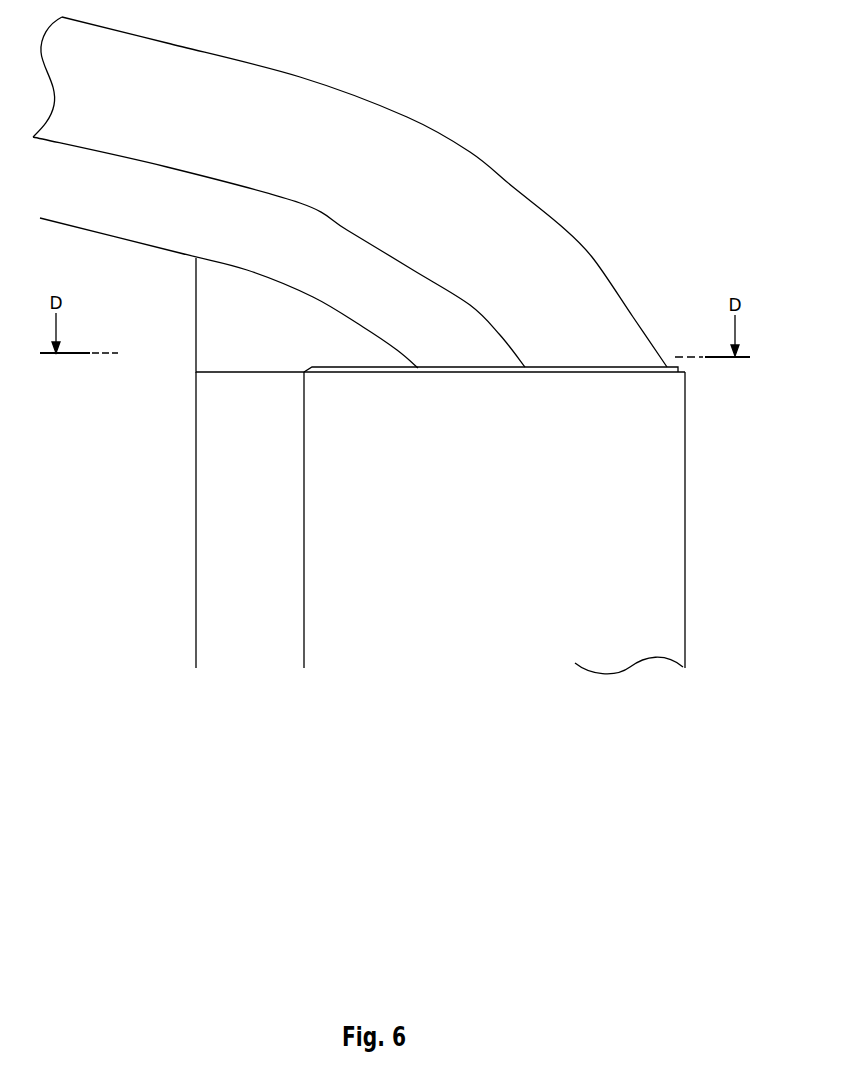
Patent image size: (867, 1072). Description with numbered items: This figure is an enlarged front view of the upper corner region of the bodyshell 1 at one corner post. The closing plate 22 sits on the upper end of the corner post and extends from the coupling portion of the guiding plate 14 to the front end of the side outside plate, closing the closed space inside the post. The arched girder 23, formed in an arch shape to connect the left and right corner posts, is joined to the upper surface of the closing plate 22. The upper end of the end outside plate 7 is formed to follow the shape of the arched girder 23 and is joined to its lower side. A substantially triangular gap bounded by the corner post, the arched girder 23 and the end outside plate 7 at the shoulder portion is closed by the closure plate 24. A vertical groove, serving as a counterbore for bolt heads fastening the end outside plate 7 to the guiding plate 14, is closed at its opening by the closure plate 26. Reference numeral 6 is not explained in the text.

The bodyshell 1 is at (615, 168).
The exhaust pipe 6 is at (402, 98).
The end outside plate 7 is at (118, 403).
The guiding plate 14 is at (678, 462).
The closing plate 22 is at (532, 366).
The arched girder 23 is at (497, 197).
The closure plate 24 is at (208, 320).
The closure plate 26 is at (205, 465).